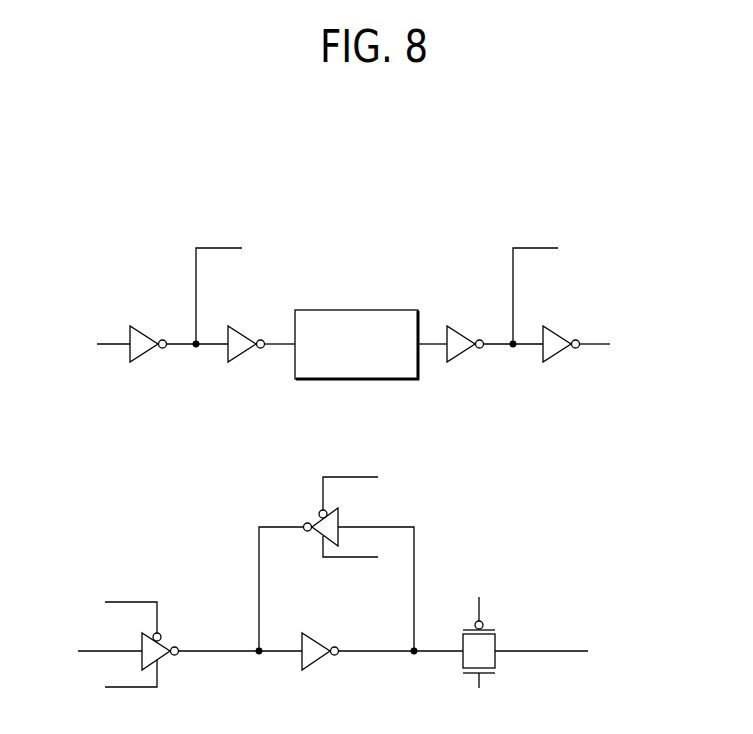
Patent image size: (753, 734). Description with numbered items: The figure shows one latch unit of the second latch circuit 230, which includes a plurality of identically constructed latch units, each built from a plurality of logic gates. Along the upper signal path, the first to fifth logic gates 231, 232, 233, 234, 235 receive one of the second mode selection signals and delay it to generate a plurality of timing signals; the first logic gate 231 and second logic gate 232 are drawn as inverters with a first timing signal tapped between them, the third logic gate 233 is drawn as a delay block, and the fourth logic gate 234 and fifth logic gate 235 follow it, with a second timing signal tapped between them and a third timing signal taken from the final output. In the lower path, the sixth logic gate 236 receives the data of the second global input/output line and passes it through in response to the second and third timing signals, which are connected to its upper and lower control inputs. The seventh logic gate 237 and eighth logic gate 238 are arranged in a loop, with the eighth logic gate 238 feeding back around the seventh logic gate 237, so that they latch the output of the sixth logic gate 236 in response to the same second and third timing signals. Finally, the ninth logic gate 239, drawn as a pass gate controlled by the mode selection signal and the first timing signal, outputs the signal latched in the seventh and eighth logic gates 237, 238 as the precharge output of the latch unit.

The second latch circuit 230 is at (90, 183).
The first logic gate 231 is at (158, 316).
The second logic gate 232 is at (256, 316).
The third logic gate 233 is at (407, 299).
The fourth logic gate 234 is at (457, 327).
The fifth logic gate 235 is at (571, 316).
The sixth logic gate 236 is at (163, 641).
The seventh logic gate 237 is at (325, 641).
The eighth logic gate 238 is at (340, 512).
The ninth logic gate 239 is at (497, 637).